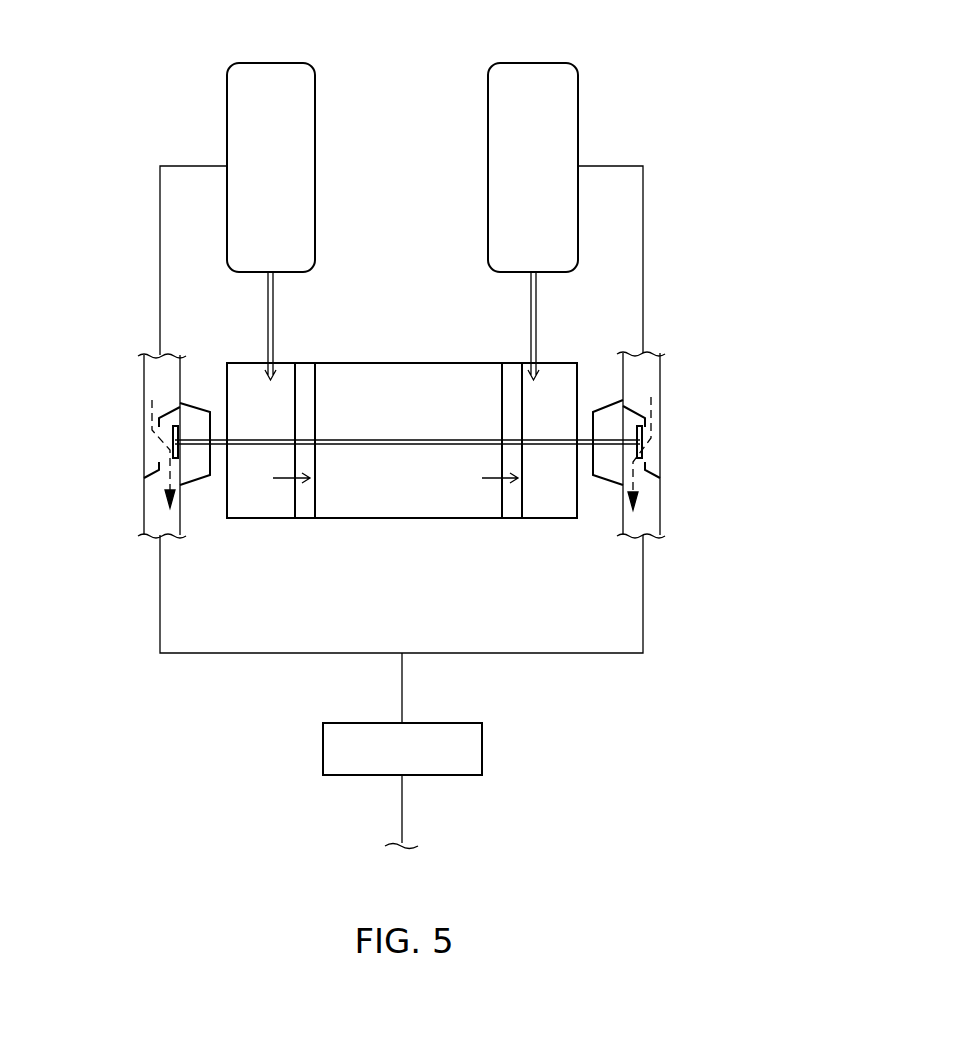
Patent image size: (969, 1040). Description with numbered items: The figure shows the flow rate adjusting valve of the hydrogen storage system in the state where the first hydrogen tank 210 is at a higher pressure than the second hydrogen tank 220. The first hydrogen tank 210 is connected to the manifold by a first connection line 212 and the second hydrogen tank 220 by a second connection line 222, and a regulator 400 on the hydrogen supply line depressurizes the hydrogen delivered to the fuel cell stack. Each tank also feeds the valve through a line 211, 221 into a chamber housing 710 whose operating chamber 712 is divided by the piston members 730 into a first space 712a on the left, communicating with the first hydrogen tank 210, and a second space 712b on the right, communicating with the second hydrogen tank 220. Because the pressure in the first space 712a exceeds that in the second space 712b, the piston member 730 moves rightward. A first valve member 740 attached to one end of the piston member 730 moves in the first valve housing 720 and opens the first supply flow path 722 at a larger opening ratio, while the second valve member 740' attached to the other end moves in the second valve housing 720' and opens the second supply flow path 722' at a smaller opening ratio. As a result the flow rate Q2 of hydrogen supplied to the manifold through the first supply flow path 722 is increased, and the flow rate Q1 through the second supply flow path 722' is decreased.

The first hydrogen tank 210 is at (268, 63).
The second hydrogen tank 220 is at (530, 63).
The first pump outlet pipe 211 is at (277, 316).
The second pump outlet pipe 221 is at (527, 316).
The first connection line 212 is at (160, 208).
The second connection line 222 is at (643, 201).
The chamber housing 710 is at (400, 363).
The operating chamber 712 is at (628, 718).
The first space 712a is at (255, 492).
The second space 712b is at (536, 492).
The piston member 730 is at (308, 512).
The first valve member 740 is at (160, 390).
The second valve member 740' is at (648, 390).
The first valve housing 720 is at (124, 446).
The second valve housing 720' is at (685, 445).
The first supply flow path 722 is at (120, 447).
The second supply flow path 722' is at (692, 442).
The regulator 400 is at (323, 748).
The flow rate Q2 is at (152, 400).
The flow rate Q1 is at (655, 415).